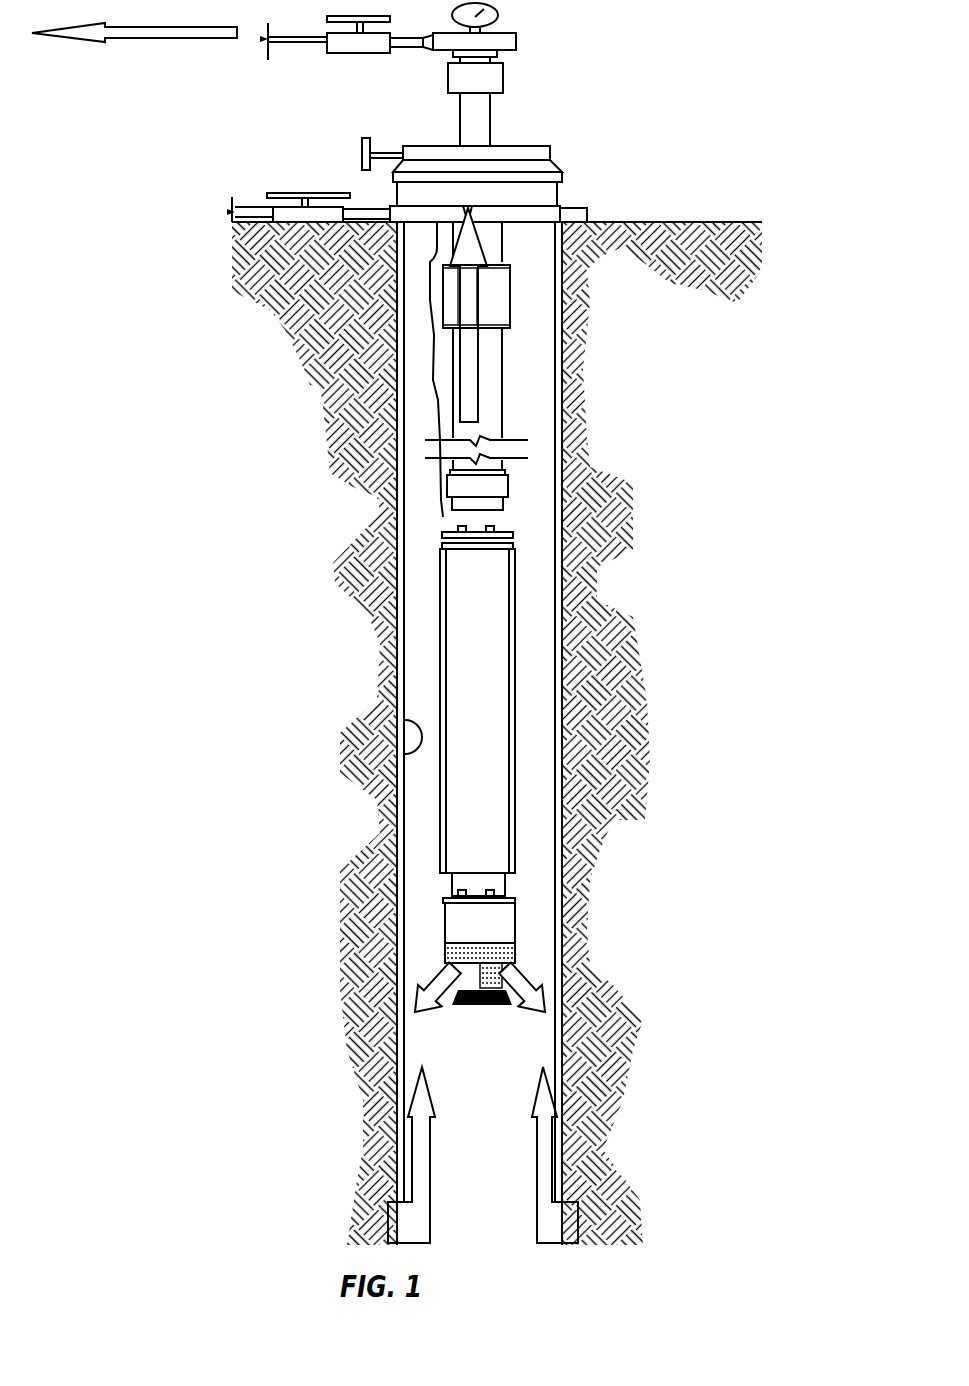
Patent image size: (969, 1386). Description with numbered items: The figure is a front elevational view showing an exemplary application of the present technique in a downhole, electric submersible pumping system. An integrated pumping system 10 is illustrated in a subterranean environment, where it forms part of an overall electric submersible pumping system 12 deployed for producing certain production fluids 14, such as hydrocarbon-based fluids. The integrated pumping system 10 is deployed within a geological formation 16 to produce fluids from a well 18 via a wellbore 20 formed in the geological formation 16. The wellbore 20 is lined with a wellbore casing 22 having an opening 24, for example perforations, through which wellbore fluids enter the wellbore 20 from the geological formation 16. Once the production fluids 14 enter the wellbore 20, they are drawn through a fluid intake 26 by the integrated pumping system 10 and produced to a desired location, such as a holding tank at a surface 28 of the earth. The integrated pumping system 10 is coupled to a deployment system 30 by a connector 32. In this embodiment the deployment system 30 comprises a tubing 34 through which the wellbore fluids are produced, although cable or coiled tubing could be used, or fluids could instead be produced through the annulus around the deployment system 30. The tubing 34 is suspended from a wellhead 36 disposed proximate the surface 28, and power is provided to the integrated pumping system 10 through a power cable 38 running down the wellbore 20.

The integrated pumping system 10 is at (530, 633).
The electric submersible pumping system 12 is at (528, 390).
The production fluids 14 is at (522, 997).
The geological formation 16 is at (366, 398).
The well 18 is at (388, 897).
The wellbore 20 is at (425, 673).
The wellbore casing 22 is at (400, 720).
The opening 24 is at (392, 1198).
The fluid intake 26 is at (495, 943).
The surface 28 is at (668, 220).
The deployment system 30 is at (507, 423).
The connector 32 is at (493, 510).
The tubing 34 is at (493, 360).
The wellhead 36 is at (543, 153).
The power cable 38 is at (442, 553).